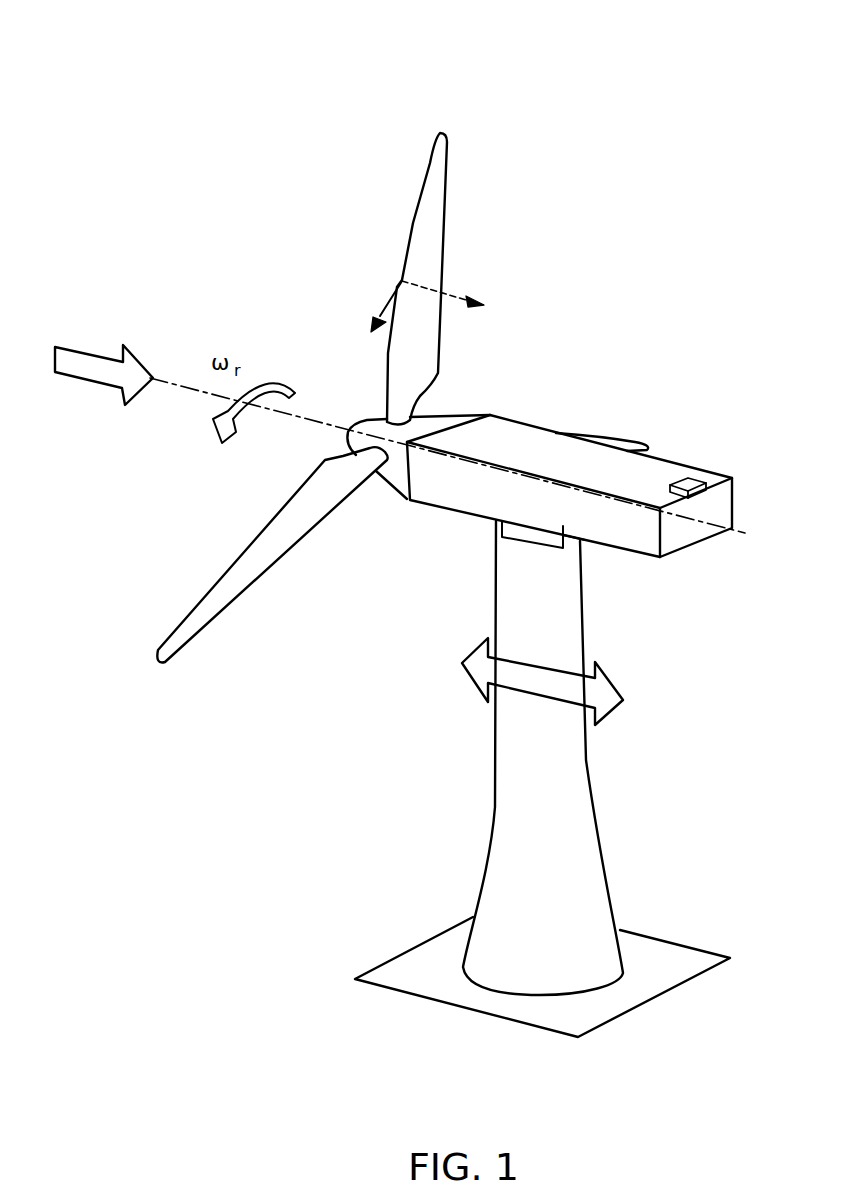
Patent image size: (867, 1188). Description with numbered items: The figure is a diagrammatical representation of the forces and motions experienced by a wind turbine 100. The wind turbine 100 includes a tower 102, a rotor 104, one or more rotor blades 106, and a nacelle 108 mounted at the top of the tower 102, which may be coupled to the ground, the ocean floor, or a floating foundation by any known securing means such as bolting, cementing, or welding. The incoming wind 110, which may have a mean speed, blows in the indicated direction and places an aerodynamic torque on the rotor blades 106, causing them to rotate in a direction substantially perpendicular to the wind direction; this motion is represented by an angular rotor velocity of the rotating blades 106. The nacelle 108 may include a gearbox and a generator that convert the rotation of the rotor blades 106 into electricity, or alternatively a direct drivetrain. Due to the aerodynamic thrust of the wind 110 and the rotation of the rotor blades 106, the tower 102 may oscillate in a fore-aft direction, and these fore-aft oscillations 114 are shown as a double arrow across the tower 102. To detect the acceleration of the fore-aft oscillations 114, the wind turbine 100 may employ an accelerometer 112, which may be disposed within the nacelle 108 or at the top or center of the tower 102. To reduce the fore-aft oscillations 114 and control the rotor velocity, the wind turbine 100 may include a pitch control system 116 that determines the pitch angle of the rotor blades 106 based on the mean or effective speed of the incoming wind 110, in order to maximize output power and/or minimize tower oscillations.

The wind turbine 100 is at (710, 65).
The tower 102 is at (593, 807).
The rotor 104 is at (393, 477).
The rotor blades 106 is at (444, 218).
The nacelle 108 is at (725, 507).
The wind 110 is at (82, 348).
The accelerometer 112 is at (692, 480).
The fore-aft oscillations 114 is at (475, 682).
The pitch control system 116 is at (523, 543).